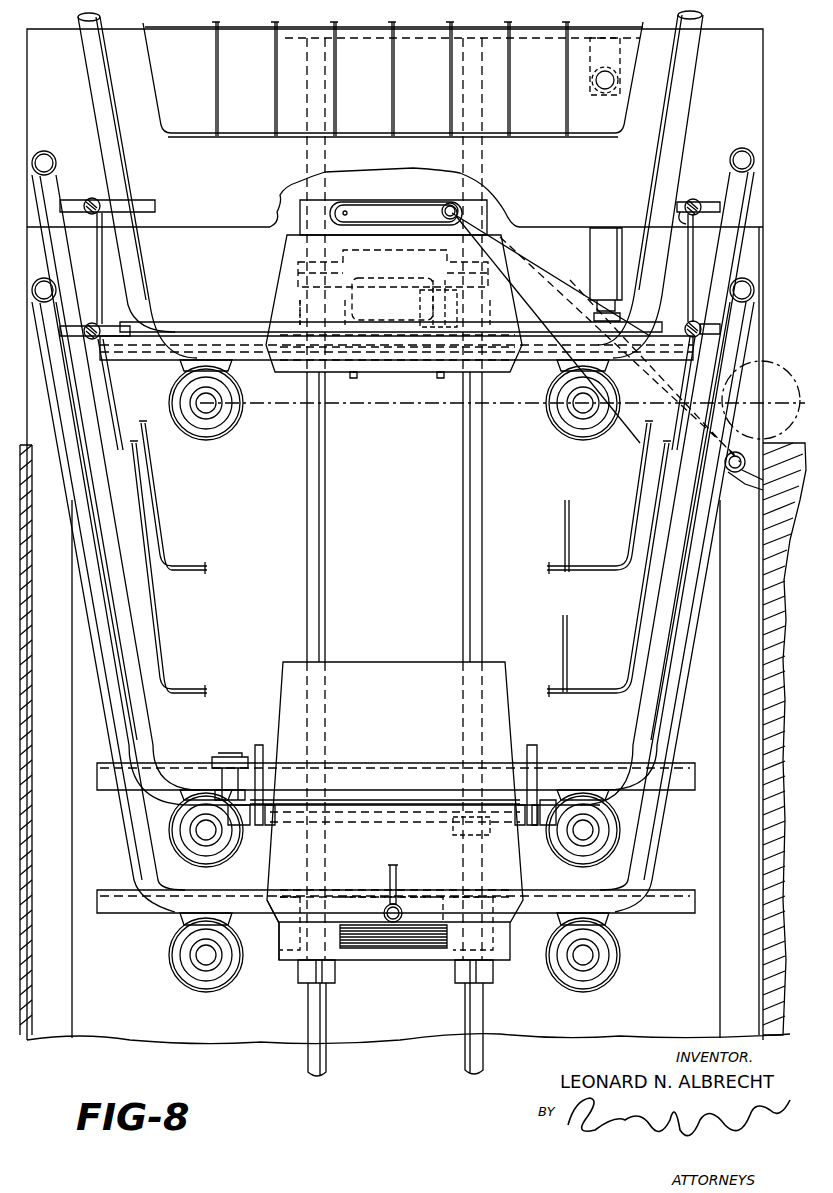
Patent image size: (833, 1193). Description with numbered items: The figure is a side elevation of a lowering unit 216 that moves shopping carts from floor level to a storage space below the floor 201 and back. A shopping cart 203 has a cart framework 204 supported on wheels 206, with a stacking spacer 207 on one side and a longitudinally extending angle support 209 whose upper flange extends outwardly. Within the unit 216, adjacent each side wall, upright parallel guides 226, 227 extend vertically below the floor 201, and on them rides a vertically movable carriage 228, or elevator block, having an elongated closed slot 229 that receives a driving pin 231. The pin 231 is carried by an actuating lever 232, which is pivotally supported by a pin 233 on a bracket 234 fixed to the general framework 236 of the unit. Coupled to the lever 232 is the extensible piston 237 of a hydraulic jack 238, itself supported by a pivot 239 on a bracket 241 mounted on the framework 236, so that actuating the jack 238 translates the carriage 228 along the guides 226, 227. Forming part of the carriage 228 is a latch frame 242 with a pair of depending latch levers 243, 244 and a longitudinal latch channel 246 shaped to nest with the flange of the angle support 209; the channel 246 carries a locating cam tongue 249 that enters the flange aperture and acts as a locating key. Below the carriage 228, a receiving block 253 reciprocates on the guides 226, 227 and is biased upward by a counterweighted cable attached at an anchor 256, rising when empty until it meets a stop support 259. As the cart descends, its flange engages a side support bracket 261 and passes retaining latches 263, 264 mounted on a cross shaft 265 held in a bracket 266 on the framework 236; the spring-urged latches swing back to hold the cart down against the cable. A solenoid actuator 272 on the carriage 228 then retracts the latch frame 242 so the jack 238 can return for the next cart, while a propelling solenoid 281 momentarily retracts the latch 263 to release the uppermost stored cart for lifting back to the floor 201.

The floor 201 is at (797, 402).
The shopping cart 203 is at (691, 112).
The cart framework 204 is at (90, 102).
The wheels 206 is at (581, 436).
The stacking spacer 207 is at (414, 662).
The angle support 209 is at (684, 330).
The lowering unit 216 is at (772, 46).
The guide 226 is at (306, 481).
The guide 227 is at (462, 498).
The carriage 228 is at (280, 194).
The slot 229 is at (358, 208).
The driving pin 231 is at (460, 206).
The actuating lever 232 is at (541, 276).
The pin 233 is at (746, 462).
The bracket 234 is at (752, 478).
The framework 236 is at (754, 641).
The piston 237 is at (546, 388).
The hydraulic jack 238 is at (588, 235).
The pivot 239 is at (622, 85).
The bracket 241 is at (618, 51).
The latch frame 242 is at (345, 298).
The latch lever 243 is at (392, 299).
The latch lever 244 is at (430, 320).
The latch channel 246 is at (232, 322).
The locating cam tongue 249 is at (388, 340).
The receiving block 253 is at (372, 960).
The anchor 256 is at (412, 925).
The stop support 259 is at (456, 836).
The side support bracket 261 is at (284, 932).
The retaining latch 263 is at (535, 745).
The retaining latch 264 is at (262, 745).
The cross shaft 265 is at (300, 818).
The bracket 266 is at (548, 800).
The solenoid actuator 272 is at (522, 250).
The propelling solenoid 281 is at (225, 745).